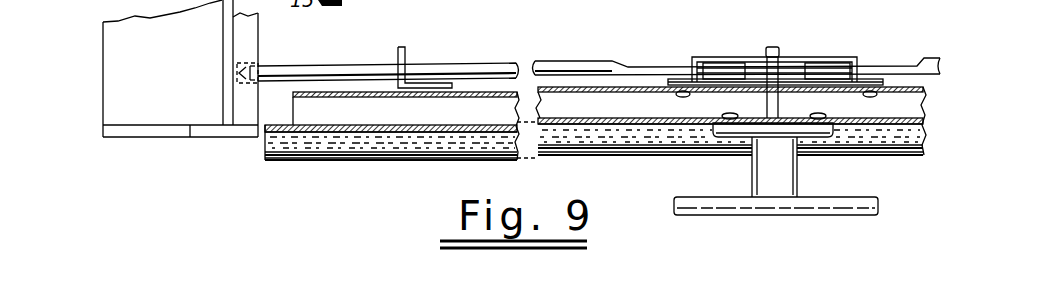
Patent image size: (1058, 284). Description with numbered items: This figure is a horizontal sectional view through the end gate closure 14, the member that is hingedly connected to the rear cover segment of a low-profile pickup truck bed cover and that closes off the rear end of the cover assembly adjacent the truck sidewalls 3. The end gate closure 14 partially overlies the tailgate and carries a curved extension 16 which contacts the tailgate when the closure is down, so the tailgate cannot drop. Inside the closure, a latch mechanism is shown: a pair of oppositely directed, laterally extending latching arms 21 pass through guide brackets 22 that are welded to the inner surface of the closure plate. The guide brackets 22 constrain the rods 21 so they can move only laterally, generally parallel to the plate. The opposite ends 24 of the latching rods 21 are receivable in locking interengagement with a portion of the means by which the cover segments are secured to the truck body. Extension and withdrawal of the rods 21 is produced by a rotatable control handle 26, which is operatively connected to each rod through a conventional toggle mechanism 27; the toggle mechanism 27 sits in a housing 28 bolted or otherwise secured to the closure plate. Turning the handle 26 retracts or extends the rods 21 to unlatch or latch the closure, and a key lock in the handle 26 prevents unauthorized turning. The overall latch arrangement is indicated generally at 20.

The sidewall 3 is at (76, 0).
The end gate closure 14 is at (560, 130).
The curved extension 16 is at (431, 160).
The support assembly 20 is at (680, 179).
The latching arm 21 is at (538, 60).
The guide bracket 22 is at (405, 50).
The opposite end 24 is at (268, 65).
The control handle 26 is at (727, 206).
The toggle mechanism 27 is at (788, 73).
The housing 28 is at (715, 57).